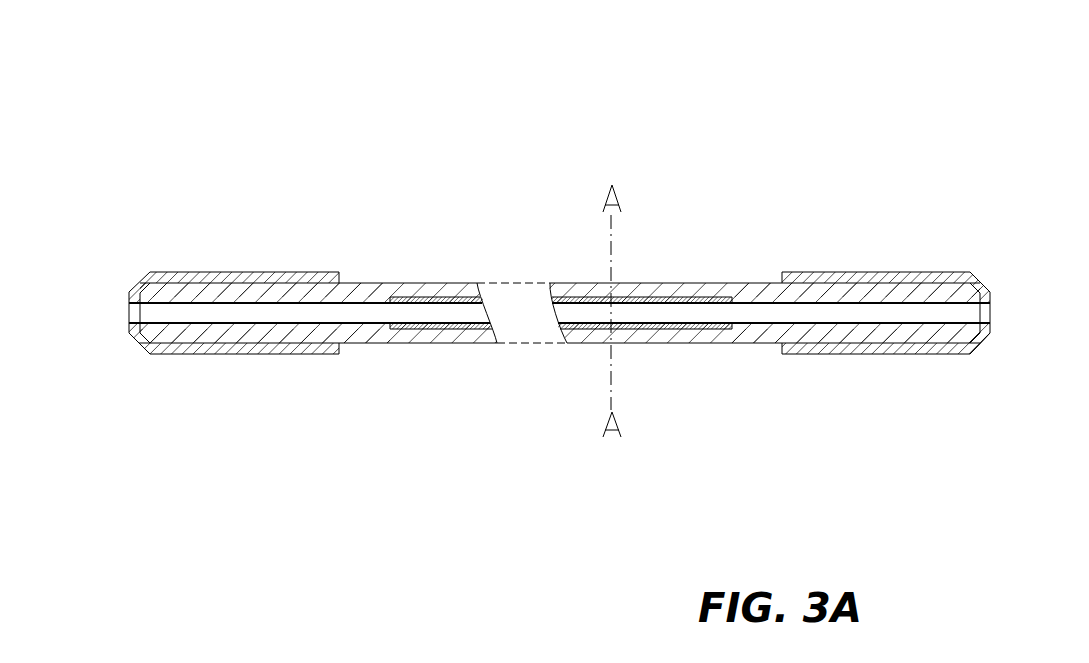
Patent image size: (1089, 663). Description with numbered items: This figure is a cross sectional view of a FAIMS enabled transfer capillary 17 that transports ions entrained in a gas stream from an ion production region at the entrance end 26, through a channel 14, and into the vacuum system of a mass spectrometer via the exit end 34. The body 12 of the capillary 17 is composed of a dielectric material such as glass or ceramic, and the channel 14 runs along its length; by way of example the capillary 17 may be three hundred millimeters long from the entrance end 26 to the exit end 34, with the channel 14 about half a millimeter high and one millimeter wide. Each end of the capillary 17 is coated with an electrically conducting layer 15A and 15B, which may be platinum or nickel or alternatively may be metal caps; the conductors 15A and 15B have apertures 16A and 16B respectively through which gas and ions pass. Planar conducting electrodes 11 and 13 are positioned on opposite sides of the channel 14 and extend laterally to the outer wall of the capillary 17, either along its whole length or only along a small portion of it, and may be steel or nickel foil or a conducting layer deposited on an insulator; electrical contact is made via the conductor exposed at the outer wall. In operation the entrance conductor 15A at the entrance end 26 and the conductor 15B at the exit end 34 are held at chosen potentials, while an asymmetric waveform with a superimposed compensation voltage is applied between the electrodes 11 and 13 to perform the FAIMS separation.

The planar conducting electrode 11 is at (417, 327).
The body 12 is at (365, 288).
The planar conducting electrode 13 is at (427, 297).
The channel 14 is at (357, 317).
The electrically conducting layer 15A is at (212, 270).
The electrically conducting layer 15B is at (862, 270).
The aperture 16A is at (125, 315).
The aperture 16B is at (998, 312).
The capillary 17 is at (695, 147).
The entrance end 26 is at (159, 362).
The exit end 34 is at (973, 362).